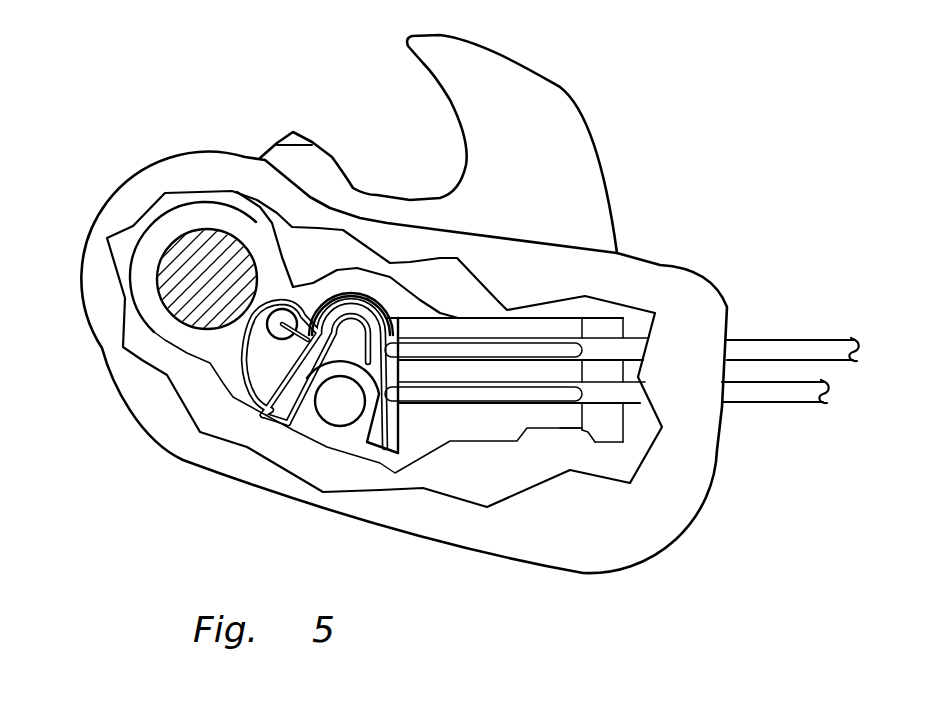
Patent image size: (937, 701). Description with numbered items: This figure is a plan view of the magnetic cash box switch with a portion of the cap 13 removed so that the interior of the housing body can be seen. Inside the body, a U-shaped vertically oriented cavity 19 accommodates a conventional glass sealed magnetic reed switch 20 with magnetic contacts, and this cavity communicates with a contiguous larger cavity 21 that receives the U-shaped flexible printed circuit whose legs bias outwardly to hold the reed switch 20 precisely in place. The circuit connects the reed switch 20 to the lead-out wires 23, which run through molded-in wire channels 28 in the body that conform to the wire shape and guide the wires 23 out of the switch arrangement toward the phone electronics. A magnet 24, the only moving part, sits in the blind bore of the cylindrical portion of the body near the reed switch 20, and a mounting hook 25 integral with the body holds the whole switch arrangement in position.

The cap 13 is at (683, 290).
The cavity 19 is at (260, 373).
The magnetic reed switch 20 is at (284, 301).
The cavity 21 is at (345, 290).
The lead-out wires 23 is at (792, 393).
The magnet 24 is at (197, 293).
The mounting hook 25 is at (533, 196).
The wire channels 28 is at (560, 363).